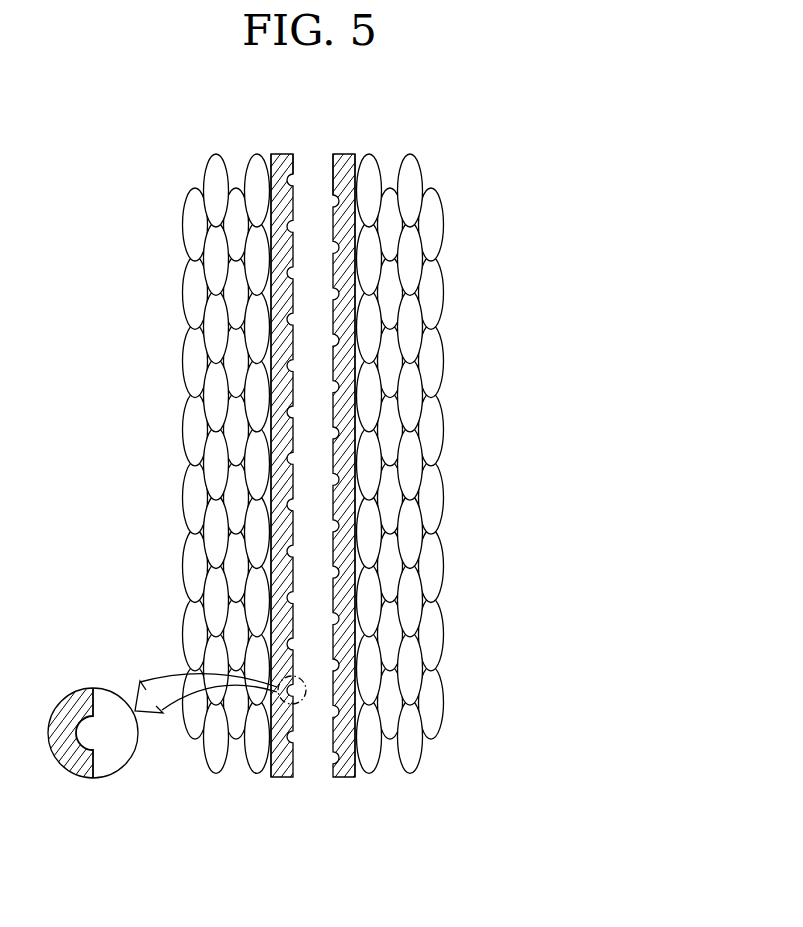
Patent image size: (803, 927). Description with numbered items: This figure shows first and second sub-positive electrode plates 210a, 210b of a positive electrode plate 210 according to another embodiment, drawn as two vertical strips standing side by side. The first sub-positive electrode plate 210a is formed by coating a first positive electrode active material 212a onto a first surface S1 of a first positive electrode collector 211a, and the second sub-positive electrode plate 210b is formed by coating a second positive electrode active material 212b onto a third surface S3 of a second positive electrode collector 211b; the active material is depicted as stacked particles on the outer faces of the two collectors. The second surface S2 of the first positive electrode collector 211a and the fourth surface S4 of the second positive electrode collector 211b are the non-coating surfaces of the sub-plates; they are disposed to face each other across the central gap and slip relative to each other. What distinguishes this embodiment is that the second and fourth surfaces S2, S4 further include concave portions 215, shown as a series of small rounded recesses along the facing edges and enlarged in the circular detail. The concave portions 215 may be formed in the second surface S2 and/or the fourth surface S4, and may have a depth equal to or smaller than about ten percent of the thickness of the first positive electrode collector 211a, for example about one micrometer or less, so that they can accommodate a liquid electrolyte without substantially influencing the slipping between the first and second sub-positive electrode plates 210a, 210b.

The positive electrode plate 210 is at (244, 498).
The first sub-positive electrode plate 210a is at (175, 478).
The second sub-positive electrode plate 210b is at (384, 478).
The first positive electrode collector 211a is at (175, 463).
The second positive electrode collector 211b is at (365, 463).
The first positive electrode active material 212a is at (215, 762).
The second positive electrode active material 212b is at (405, 762).
The concave portions 215 is at (91, 733).
The first surface S1 is at (272, 166).
The second surface S2 is at (294, 162).
The third surface S3 is at (355, 162).
The fourth surface S4 is at (334, 163).